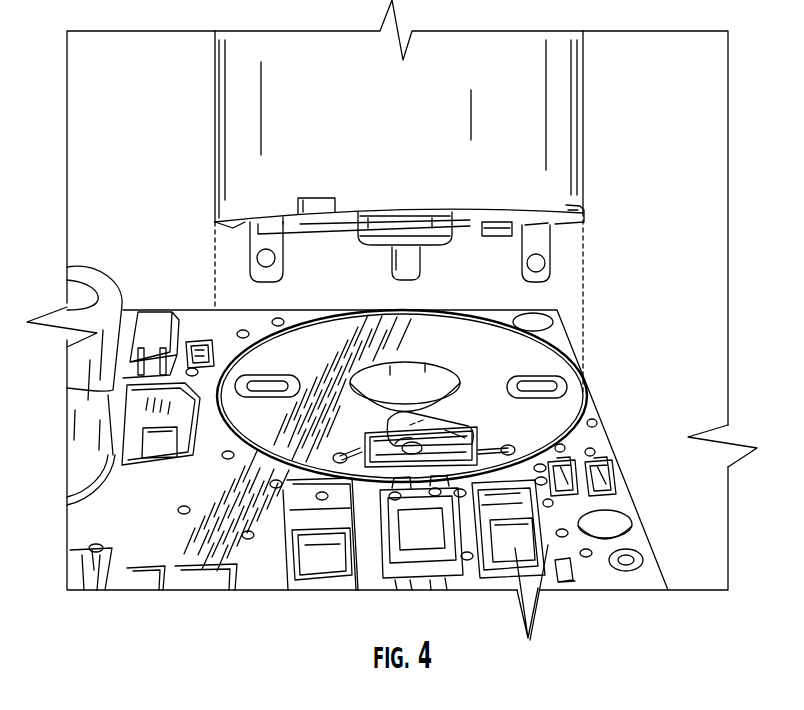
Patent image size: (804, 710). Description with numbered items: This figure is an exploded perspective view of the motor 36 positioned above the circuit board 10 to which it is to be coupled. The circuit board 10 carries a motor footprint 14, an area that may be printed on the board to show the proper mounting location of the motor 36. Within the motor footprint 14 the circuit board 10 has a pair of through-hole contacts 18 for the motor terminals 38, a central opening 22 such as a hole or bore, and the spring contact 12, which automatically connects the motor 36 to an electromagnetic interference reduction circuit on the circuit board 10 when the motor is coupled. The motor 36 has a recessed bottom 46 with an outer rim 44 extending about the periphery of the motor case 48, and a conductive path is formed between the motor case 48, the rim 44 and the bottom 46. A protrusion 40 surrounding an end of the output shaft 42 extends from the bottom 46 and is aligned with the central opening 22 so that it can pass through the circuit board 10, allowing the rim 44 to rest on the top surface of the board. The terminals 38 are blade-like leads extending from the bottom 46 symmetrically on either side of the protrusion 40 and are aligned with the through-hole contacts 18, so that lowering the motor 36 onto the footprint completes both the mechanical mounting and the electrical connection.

The circuit board 10 is at (603, 450).
The spring contact 12 is at (465, 421).
The motor footprint 14 is at (587, 393).
The through-hole contacts 18 is at (270, 383).
The opening 22 is at (443, 371).
The motor 36 is at (607, 141).
The terminals 38 is at (258, 238).
The protrusion 40 is at (423, 238).
The output shaft 42 is at (388, 263).
The outer rim 44 is at (311, 232).
The bottom 46 is at (313, 207).
The motor case 48 is at (585, 217).